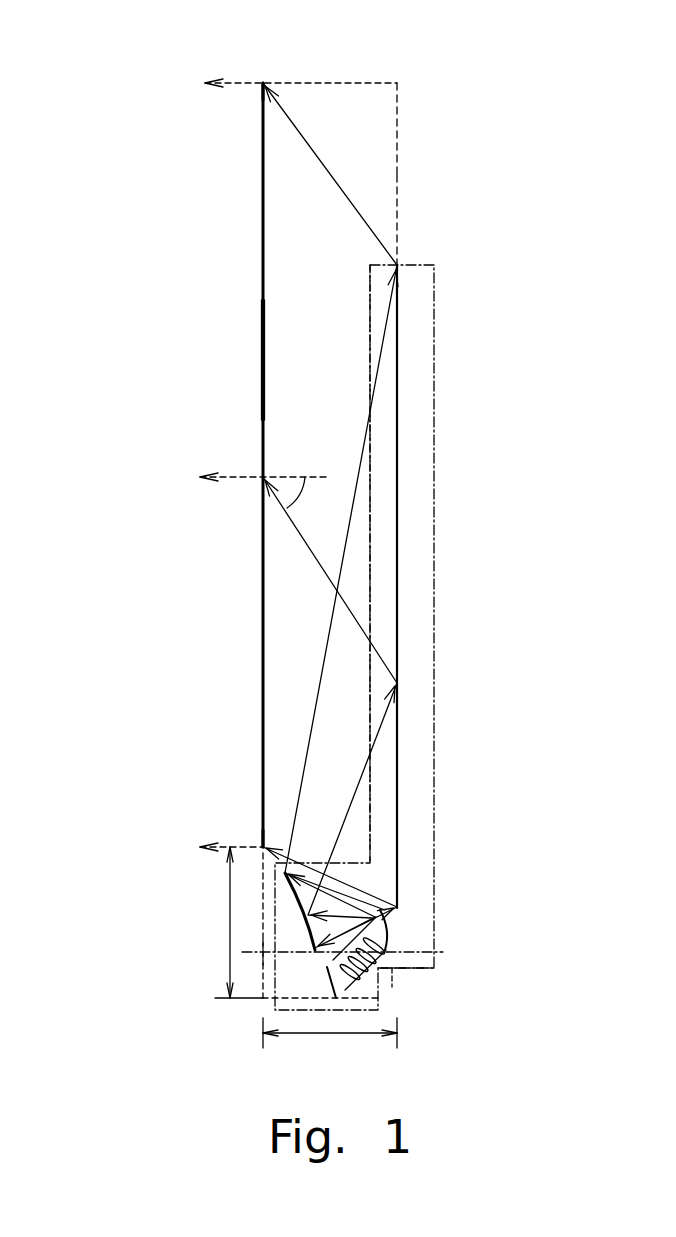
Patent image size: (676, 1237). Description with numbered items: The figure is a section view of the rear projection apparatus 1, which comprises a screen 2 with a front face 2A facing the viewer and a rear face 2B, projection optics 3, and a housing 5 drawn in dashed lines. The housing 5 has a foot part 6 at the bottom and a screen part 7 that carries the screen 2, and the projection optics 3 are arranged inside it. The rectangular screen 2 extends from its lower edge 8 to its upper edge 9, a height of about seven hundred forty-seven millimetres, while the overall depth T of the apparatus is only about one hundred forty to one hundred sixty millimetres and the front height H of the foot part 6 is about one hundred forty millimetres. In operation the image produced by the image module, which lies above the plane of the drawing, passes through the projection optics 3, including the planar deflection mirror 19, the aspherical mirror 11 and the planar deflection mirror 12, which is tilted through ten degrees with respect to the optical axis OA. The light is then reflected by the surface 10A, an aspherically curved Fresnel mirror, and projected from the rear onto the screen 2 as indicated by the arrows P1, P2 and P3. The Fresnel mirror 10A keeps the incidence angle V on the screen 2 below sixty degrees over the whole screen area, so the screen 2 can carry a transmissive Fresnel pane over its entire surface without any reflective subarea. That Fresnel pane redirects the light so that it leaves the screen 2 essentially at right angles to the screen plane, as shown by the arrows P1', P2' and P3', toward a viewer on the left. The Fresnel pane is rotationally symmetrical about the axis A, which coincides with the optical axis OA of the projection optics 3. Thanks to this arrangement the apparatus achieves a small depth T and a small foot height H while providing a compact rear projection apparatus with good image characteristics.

The rear projection apparatus 1 is at (55, 79).
The screen 2 is at (261, 257).
The front face 2A is at (260, 355).
The rear face 2B is at (264, 380).
The projection optics 3 is at (434, 725).
The housing 5 is at (398, 190).
The foot part 6 is at (394, 979).
The screen part 7 is at (398, 136).
The lower edge 8 is at (260, 846).
The upper edge 9 is at (263, 83).
The Fresnel mirror 10A is at (400, 628).
The aspherical mirror 11 is at (304, 903).
The deflection mirror 12 is at (377, 922).
The deflection mirror 19 is at (326, 971).
The arrow P1 is at (330, 500).
The arrow P2 is at (330, 699).
The arrow P3 is at (330, 887).
The arrow P1' is at (301, 109).
The arrow P2' is at (263, 432).
The arrow P3' is at (221, 817).
The incidence angle V is at (302, 498).
The front height H is at (233, 922).
The depth T is at (330, 1039).
The axis A is at (243, 955).
The optical axis OA is at (444, 952).